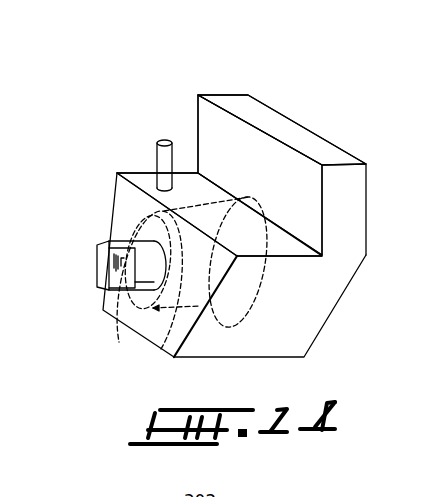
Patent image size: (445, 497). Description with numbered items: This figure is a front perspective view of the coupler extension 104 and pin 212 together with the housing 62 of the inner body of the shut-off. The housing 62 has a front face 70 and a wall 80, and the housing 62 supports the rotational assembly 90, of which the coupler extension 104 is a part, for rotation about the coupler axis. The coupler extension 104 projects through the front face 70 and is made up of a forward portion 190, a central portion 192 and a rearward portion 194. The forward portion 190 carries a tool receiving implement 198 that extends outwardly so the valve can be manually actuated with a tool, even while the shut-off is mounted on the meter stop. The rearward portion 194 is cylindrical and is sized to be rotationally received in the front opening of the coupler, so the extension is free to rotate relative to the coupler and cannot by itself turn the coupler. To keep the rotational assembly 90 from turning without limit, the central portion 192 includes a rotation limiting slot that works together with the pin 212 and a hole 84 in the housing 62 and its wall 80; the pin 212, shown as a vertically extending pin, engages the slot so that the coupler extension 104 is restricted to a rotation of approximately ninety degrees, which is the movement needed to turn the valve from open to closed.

The housing 62 is at (286, 106).
The rotational assembly 90 is at (331, 128).
The front face 70 is at (124, 203).
The through hole 84 is at (219, 209).
The wall 80 is at (255, 236).
The pin 212 is at (156, 154).
The coupler extension 104 is at (112, 243).
The tool receiving implement 198 is at (95, 278).
The forward portion 190 is at (142, 297).
The central portion 192 is at (160, 350).
The rearward portion 194 is at (262, 319).